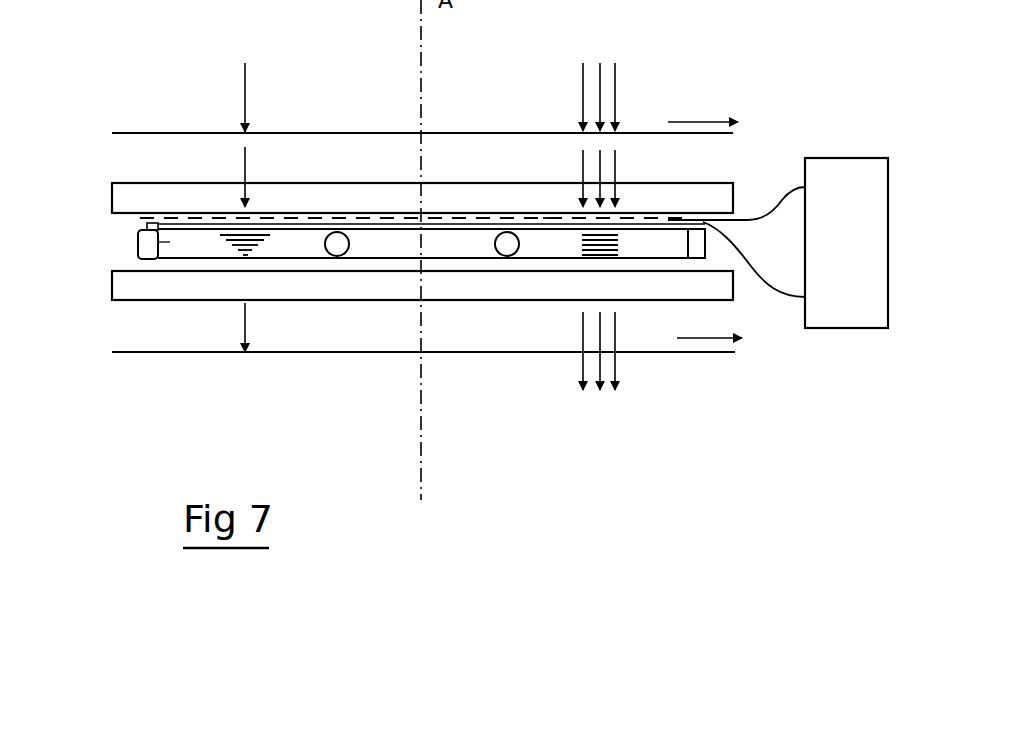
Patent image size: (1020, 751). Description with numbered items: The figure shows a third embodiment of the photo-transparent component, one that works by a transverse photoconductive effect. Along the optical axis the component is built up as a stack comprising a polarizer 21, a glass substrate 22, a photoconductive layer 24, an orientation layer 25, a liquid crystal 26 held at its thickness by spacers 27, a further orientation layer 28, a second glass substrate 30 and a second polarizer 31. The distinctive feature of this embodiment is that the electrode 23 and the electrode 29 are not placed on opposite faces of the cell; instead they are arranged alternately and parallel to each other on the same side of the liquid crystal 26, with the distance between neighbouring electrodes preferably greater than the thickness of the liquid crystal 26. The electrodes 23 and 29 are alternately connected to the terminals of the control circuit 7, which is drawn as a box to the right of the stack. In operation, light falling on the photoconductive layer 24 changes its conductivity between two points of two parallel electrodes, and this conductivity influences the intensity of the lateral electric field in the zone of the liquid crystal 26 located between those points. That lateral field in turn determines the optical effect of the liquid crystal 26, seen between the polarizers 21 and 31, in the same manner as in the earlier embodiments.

The control circuit 7 is at (848, 305).
The polarizer 21 is at (172, 133).
The glass substrate 22 is at (143, 190).
The uniform electrode 23 is at (712, 213).
The photoconductive layer 24 is at (140, 218).
The orientation layer 25 is at (150, 228).
The liquid crystal 26 is at (140, 245).
The spacers 27 is at (505, 243).
The orientation layer 28 is at (158, 258).
The uniform electrode 29 is at (596, 216).
The glass substrate 30 is at (147, 290).
The polarizer 31 is at (165, 355).